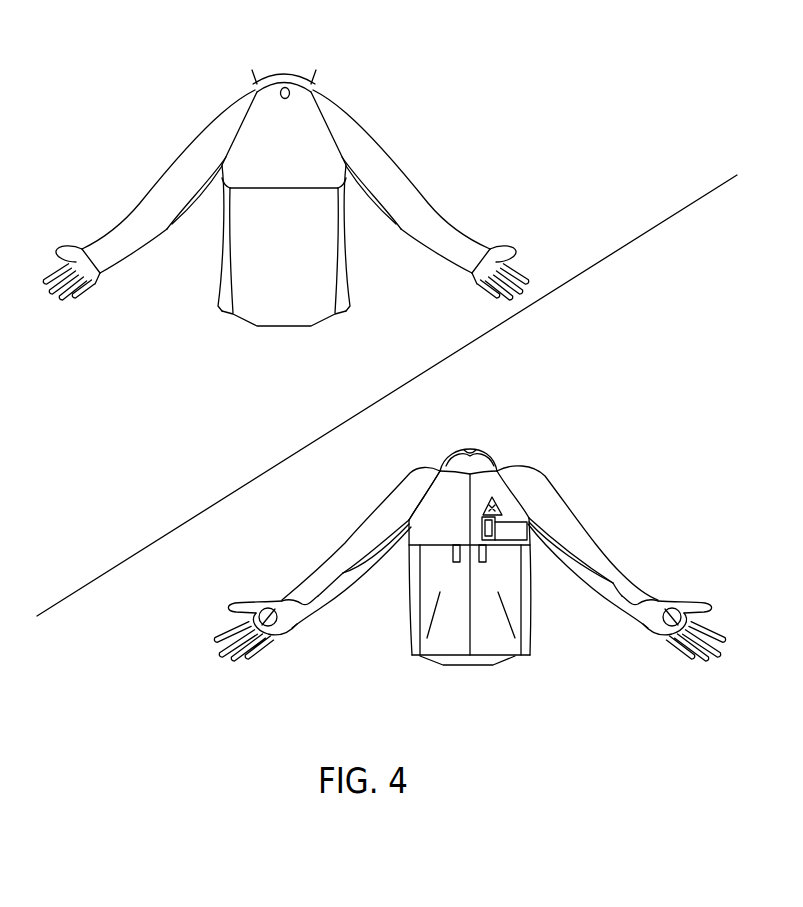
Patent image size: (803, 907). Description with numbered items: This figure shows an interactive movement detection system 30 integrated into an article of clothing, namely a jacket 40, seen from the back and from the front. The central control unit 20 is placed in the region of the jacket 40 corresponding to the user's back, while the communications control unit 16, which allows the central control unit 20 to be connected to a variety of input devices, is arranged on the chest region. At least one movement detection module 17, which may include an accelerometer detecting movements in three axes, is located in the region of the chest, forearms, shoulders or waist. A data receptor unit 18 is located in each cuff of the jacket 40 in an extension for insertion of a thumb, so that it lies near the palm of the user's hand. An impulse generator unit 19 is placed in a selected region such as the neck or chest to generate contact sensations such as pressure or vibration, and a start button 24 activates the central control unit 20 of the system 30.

The interactive movement detection system 30 is at (116, 100).
The central control unit 20 is at (286, 87).
The jacket 40 is at (221, 277).
The movement detection module 17 is at (470, 518).
The impulse generator unit 19 is at (481, 490).
The start button 24 is at (498, 505).
The communications control unit 16 is at (491, 540).
The data receptor unit 18 is at (266, 608).